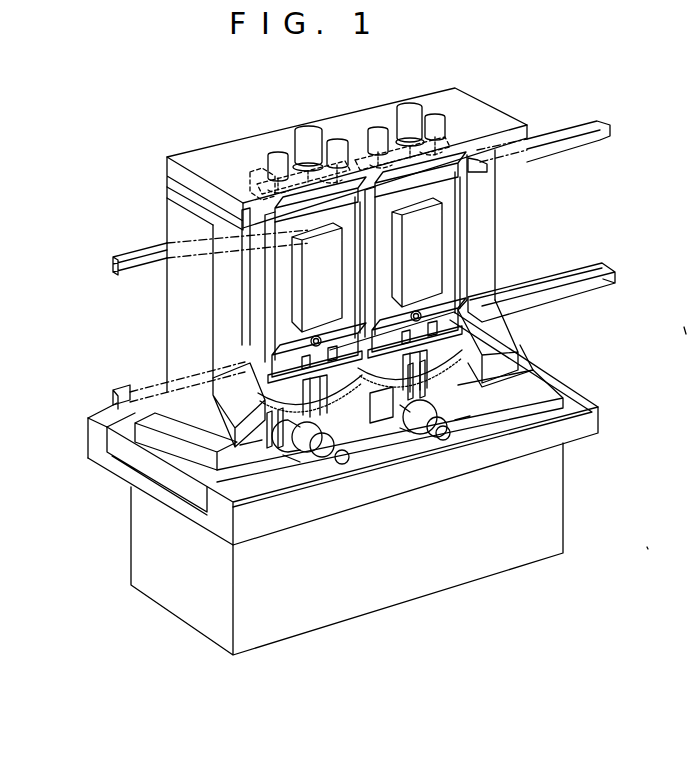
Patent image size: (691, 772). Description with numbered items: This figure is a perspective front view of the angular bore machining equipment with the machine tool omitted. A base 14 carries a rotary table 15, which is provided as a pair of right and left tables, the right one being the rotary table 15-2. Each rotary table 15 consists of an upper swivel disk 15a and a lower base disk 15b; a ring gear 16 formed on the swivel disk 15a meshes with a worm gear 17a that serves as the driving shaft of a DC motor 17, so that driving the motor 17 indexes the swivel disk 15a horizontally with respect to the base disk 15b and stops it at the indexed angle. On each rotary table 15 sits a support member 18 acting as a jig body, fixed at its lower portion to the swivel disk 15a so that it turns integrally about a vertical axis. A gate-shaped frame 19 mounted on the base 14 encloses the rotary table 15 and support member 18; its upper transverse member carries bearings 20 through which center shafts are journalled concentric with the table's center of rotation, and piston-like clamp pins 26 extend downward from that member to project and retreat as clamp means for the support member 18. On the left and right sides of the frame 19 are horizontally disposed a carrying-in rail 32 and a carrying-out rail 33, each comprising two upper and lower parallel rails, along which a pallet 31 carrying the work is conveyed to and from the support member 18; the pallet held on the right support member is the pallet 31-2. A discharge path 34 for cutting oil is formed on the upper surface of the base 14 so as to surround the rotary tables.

The base 14 is at (413, 582).
The rotary table 15 is at (388, 445).
The right rotary table 15-2 is at (478, 440).
The swivel disk 15a is at (292, 462).
The base disk 15b is at (255, 418).
The ring gear 16 is at (362, 455).
The DC motor 17 is at (318, 468).
The worm gear 17a is at (225, 395).
The support member 18 is at (247, 188).
The gate-shaped frame 19 is at (167, 329).
The bearings 20 is at (305, 130).
The clamp pin 26 is at (262, 172).
The pallet 31 is at (248, 243).
The right-hand pallet 31-2 is at (440, 183).
The carrying-in rail 32 is at (116, 268).
The carrying-out rail 33 is at (592, 118).
The discharge path 34 is at (132, 455).